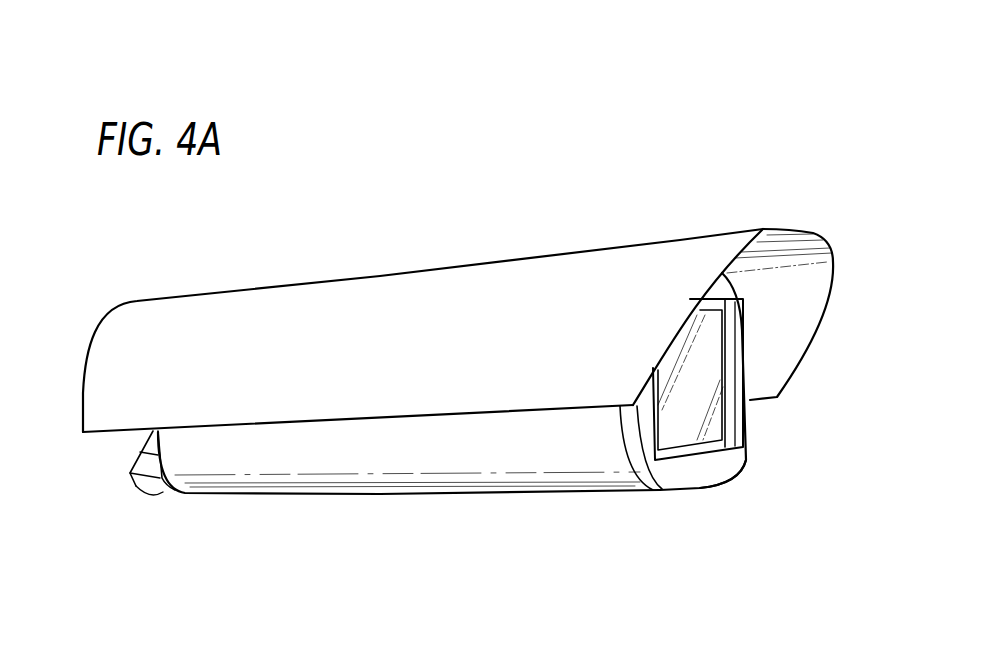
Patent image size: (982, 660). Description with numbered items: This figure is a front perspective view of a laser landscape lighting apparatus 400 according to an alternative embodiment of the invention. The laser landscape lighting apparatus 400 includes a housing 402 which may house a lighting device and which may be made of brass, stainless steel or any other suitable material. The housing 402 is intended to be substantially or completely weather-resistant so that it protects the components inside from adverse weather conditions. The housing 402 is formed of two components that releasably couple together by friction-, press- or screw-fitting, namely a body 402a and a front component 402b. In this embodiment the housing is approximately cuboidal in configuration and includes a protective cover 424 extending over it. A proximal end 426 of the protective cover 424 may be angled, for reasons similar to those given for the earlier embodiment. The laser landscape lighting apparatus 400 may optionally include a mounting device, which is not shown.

The laser landscape lighting apparatus 400 is at (312, 194).
The housing 402 is at (604, 283).
The body 402a is at (185, 443).
The front component 402b is at (730, 468).
The protective cover 424 is at (455, 265).
The proximal end 426 is at (747, 192).